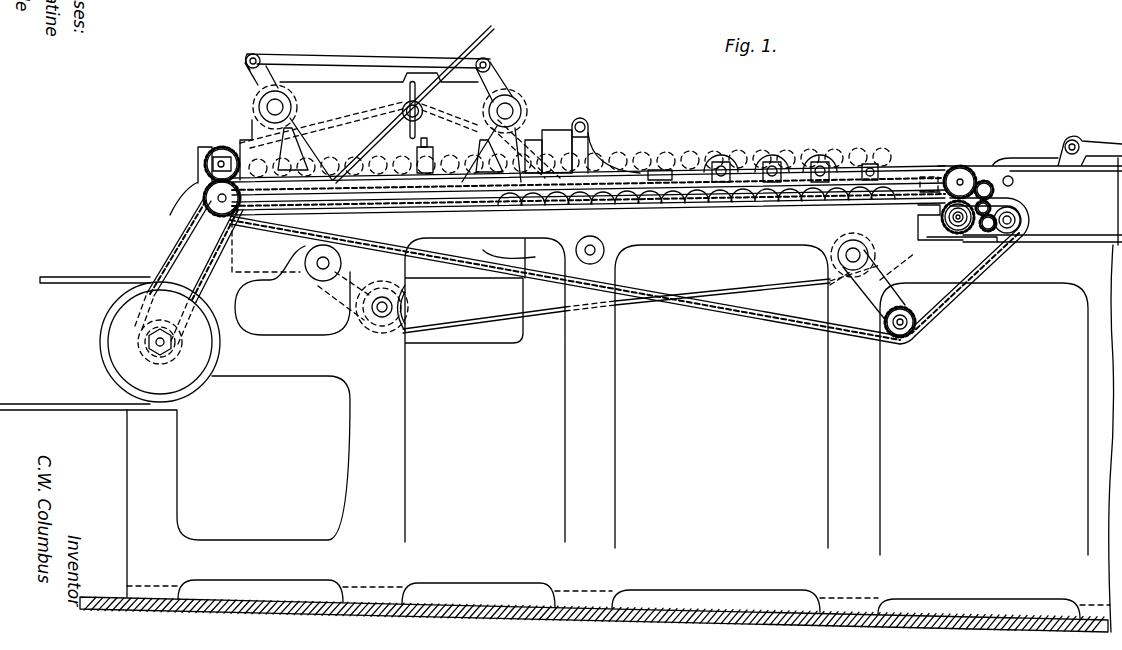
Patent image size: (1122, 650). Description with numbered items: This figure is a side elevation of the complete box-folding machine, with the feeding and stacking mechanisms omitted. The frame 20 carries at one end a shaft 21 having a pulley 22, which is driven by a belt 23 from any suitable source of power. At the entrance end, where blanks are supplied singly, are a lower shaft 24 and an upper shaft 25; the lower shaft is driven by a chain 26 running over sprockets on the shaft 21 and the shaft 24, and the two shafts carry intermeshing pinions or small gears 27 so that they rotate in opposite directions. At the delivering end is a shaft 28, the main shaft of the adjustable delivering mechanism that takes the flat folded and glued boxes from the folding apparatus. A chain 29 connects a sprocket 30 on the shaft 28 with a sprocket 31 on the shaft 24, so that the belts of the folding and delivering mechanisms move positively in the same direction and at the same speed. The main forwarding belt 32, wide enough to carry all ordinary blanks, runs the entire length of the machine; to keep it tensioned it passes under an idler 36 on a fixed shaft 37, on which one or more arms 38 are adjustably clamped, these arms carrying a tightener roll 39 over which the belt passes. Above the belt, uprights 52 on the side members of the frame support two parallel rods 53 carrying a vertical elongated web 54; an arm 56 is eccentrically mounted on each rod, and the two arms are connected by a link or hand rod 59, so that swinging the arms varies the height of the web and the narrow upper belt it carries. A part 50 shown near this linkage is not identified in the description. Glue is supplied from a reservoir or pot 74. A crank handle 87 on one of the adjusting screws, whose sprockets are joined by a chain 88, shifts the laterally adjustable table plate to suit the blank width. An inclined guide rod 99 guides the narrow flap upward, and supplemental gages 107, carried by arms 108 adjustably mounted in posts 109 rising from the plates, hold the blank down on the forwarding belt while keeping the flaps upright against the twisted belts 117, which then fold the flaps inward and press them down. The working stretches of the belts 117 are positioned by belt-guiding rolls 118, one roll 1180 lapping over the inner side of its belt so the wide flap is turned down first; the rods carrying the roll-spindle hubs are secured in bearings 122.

The frame 20 is at (396, 381).
The shaft 21 is at (149, 345).
The pulley 22 is at (108, 311).
The belt 23 is at (95, 277).
The lower shaft 24 is at (203, 194).
The upper shaft 25 is at (205, 158).
The chain 26 is at (178, 237).
The intermeshing pinions 27 is at (213, 169).
The shaft 28 is at (1025, 220).
The chain 29 is at (958, 294).
The sprocket 30 is at (965, 243).
The sprocket 31 is at (246, 206).
The main forwarding belt 32 is at (735, 291).
The idler 36 is at (408, 301).
The fixed shaft 37 is at (378, 318).
The arm 38 is at (347, 290).
The tightener roll 39 is at (312, 275).
The link 50 is at (500, 80).
The uprights 52 is at (310, 137).
The parallel rods 53 is at (262, 106).
The web 54 is at (491, 26).
The arm 56 is at (245, 76).
The link or hand rod 59 is at (403, 56).
The glue reservoir or pot 74 is at (528, 258).
The crank handle 87 is at (845, 212).
The chain 88 is at (540, 208).
The inclined guide rod 99 is at (435, 150).
The supplemental gages 107 is at (598, 148).
The arms 108 is at (590, 128).
The posts 109 is at (582, 118).
The twisted belts 117 is at (932, 162).
The belt-guiding rolls 118 is at (822, 157).
The belt-guiding roll 1180 is at (724, 157).
The bearings 122 is at (663, 180).